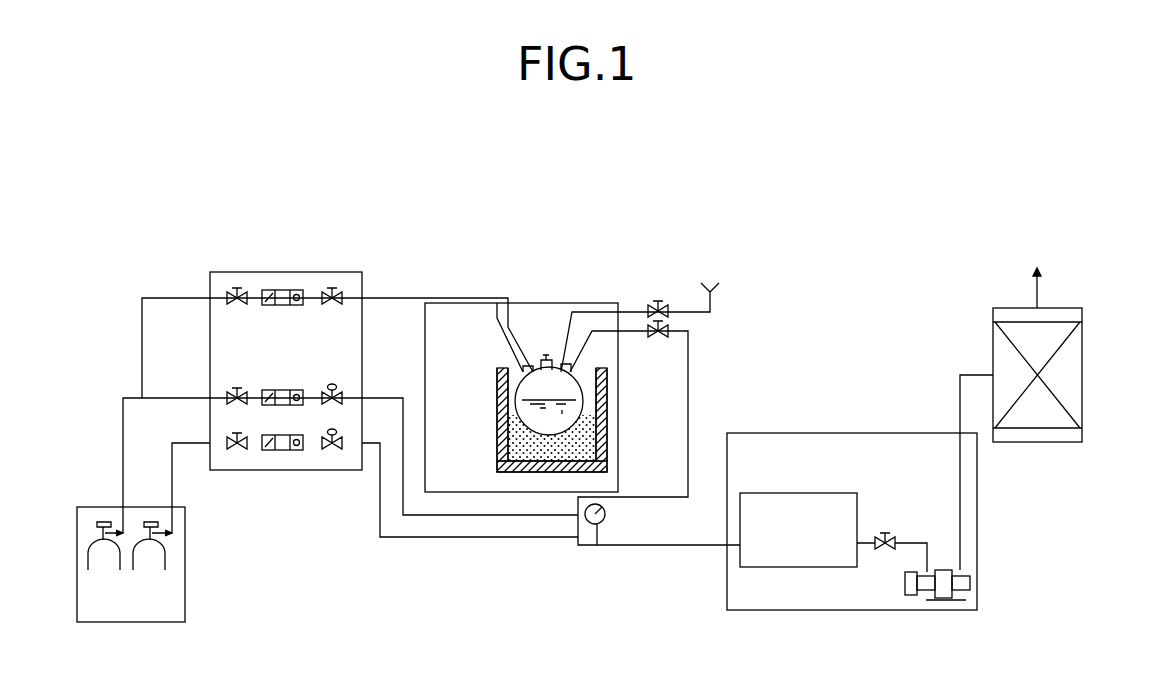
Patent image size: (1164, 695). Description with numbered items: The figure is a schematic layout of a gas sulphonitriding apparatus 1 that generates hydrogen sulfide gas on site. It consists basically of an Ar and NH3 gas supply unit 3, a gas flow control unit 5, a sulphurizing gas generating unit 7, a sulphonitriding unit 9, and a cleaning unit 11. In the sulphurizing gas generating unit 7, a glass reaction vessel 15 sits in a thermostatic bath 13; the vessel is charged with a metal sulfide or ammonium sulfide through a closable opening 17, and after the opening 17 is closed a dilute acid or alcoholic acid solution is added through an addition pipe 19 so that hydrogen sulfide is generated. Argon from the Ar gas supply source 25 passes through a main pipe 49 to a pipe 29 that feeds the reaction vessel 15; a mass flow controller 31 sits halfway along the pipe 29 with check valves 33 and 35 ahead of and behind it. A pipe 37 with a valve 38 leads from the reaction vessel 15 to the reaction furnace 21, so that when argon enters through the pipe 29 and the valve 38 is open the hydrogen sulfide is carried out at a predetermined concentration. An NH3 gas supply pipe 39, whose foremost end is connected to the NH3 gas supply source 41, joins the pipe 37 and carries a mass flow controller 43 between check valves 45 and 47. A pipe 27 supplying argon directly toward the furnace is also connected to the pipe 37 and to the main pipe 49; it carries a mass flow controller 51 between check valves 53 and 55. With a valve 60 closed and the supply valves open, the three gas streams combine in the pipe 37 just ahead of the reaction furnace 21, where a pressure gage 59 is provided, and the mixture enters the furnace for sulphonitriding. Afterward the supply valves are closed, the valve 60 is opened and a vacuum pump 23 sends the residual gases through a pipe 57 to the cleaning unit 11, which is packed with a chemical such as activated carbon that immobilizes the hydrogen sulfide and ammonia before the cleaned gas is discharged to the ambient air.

The gas sulphonitriding apparatus 1 is at (512, 180).
The Ar and NH3 gas supply unit 3 is at (182, 622).
The gas flow control unit 5 is at (258, 272).
The sulphurizing gas generating unit 7 is at (552, 303).
The sulphonitriding unit 9 is at (727, 610).
The cleaning unit 11 is at (1084, 398).
The thermostatic bath 13 is at (497, 398).
The glass reaction vessel 15 is at (497, 303).
The closable opening 17 is at (545, 355).
The addition pipe 19 is at (630, 310).
The reaction furnace 21 is at (775, 493).
The vacuum pump 23 is at (905, 590).
The Ar gas supply source 25 is at (86, 556).
The pipe 27 is at (172, 398).
The pipe 29 is at (157, 298).
The mass flow controller 31 is at (290, 290).
The check valve 33 is at (237, 290).
The check valve 35 is at (340, 290).
The pipe 37 is at (688, 350).
The valve 38 is at (655, 338).
The NH3 gas supply pipe 39 is at (172, 463).
The NH3 gas supply source 41 is at (167, 553).
The mass flow controller 43 is at (293, 452).
The check valve 45 is at (237, 450).
The check valve 47 is at (335, 450).
The main pipe 49 is at (123, 418).
The mass flow controller 51 is at (282, 390).
The check valve 53 is at (237, 390).
The check valve 55 is at (328, 388).
The pipe 57 is at (958, 392).
The pressure gage 59 is at (606, 515).
The valve 60 is at (892, 532).